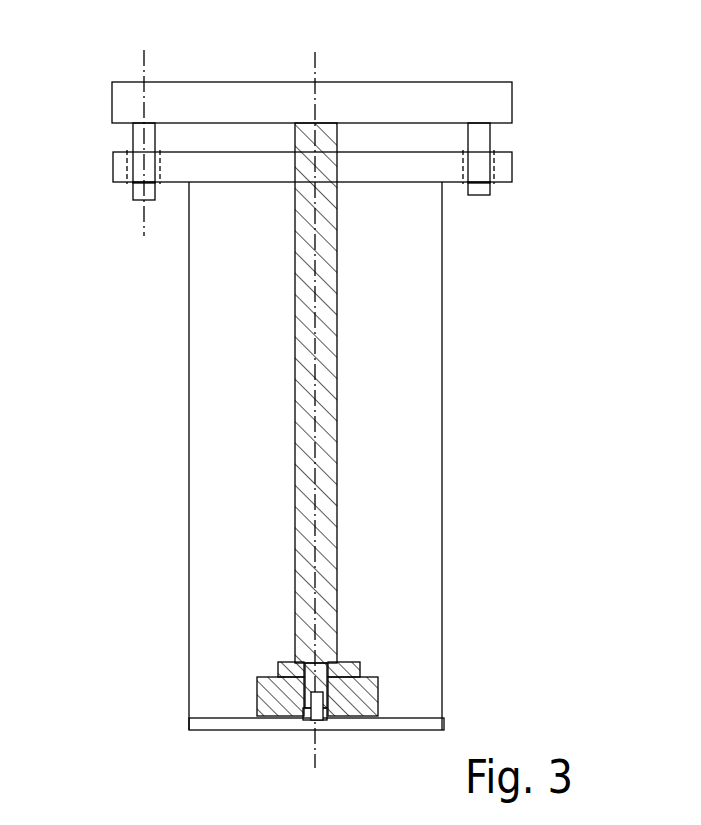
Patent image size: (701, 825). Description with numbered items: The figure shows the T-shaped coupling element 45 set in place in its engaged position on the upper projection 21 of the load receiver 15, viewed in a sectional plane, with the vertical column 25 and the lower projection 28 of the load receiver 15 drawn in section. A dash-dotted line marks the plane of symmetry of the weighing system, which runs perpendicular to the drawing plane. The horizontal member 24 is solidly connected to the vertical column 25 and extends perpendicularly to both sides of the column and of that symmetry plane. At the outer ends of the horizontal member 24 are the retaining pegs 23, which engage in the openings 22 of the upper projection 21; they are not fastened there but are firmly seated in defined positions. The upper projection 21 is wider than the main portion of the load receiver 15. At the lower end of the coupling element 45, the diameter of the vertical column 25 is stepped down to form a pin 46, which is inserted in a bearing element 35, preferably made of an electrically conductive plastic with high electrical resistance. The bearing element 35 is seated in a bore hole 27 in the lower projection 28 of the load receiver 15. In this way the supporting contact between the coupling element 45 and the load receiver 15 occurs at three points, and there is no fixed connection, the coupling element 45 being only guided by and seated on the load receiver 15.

The T-shaped coupling element 45 is at (519, 70).
The horizontal member 24 is at (498, 97).
The upper projection 21 is at (386, 163).
The retaining pegs 23 is at (134, 142).
The openings 22 is at (132, 186).
The load receiver 15 is at (256, 387).
The vertical column 25 is at (328, 369).
The bearing element 35 is at (360, 664).
The lower projection 28 is at (272, 697).
The pin 46 is at (328, 720).
The bore hole 27 is at (303, 717).